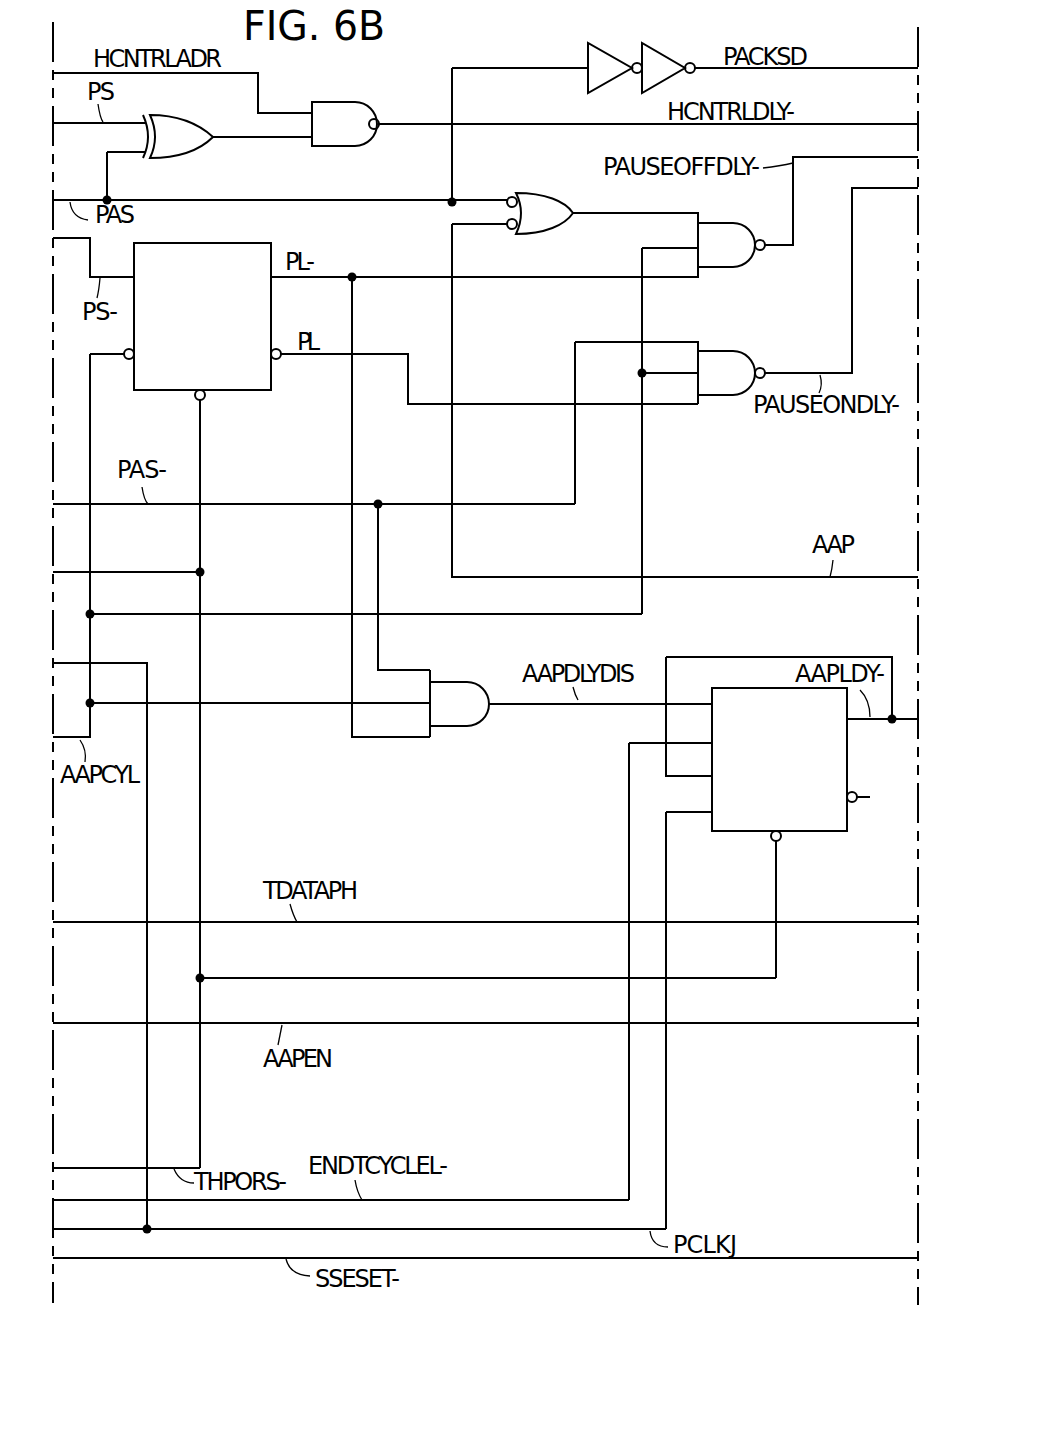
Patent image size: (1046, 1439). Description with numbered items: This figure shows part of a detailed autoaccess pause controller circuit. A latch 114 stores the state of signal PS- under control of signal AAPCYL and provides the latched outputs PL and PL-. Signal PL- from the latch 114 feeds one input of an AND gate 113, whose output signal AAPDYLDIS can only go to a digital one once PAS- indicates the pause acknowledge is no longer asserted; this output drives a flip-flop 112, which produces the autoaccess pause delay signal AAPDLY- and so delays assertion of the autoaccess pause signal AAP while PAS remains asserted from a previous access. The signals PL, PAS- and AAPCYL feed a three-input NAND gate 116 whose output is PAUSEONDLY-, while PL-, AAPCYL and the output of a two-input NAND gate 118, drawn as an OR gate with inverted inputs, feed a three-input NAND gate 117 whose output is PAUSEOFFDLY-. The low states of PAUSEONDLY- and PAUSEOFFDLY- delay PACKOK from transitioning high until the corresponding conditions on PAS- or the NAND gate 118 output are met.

The flip-flop 112 is at (807, 833).
The AND gate 113 is at (450, 682).
The latch 114 is at (258, 243).
The three-input NAND gate 116 is at (712, 351).
The three-input NAND gate 117 is at (717, 223).
The two-input NAND gate 118 is at (524, 193).